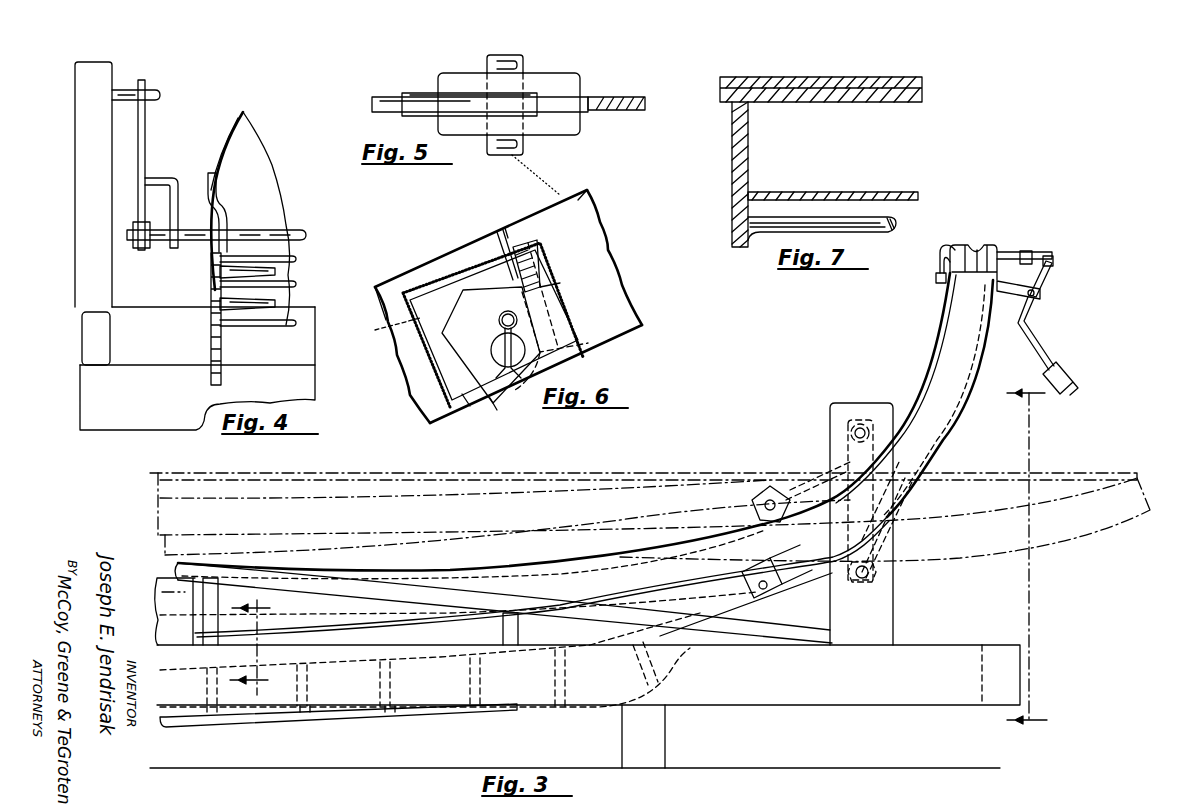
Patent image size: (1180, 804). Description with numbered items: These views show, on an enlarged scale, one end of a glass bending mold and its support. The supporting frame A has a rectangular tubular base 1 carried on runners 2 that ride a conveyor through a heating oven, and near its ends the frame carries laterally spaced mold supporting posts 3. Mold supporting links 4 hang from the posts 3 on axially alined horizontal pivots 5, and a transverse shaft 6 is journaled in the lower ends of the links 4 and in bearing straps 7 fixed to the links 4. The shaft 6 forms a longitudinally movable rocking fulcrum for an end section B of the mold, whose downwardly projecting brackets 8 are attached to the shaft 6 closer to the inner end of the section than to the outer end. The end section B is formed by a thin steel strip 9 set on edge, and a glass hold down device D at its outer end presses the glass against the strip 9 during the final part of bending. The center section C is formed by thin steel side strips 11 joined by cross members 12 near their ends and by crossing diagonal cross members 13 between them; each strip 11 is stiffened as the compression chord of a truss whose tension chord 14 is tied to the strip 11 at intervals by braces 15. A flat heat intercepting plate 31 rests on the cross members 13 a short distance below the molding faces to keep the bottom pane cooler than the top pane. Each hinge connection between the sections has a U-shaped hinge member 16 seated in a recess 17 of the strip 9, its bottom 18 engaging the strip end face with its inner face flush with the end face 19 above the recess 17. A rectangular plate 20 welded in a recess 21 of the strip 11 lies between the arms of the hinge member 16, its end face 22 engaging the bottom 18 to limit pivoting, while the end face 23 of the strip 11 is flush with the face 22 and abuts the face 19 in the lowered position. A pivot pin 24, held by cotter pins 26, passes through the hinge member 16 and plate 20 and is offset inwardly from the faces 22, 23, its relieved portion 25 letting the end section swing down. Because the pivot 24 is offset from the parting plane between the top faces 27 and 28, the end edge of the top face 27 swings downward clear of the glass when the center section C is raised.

In FIG. 4, the base 1 is at (78, 362).
In FIG. 3, the base 1 is at (778, 700).
In FIG. 3, the runners 2 is at (666, 742).
In FIG. 4, the mold supporting posts 3 is at (75, 150).
In FIG. 3, the mold supporting posts 3 is at (895, 632).
In FIG. 4, the mold supporting links 4 is at (146, 135).
In FIG. 3, the mold supporting links 4 is at (840, 440).
In FIG. 4, the horizontal pivots 5 is at (160, 92).
In FIG. 3, the horizontal pivots 5 is at (858, 426).
In FIG. 4, the shaft 6 is at (182, 244).
In FIG. 3, the shaft 6 is at (873, 585).
In FIG. 4, the bearing straps 7 is at (178, 195).
In FIG. 3, the bearing straps 7 is at (212, 642).
In FIG. 4, the brackets 8 is at (222, 205).
In FIG. 3, the brackets 8 is at (895, 533).
In FIG. 4, the steel strip 9 is at (243, 112).
In FIG. 5, the steel strip 9 is at (638, 97).
In FIG. 6, the steel strip 9 is at (612, 343).
In FIG. 3, the steel strip 9 is at (958, 368).
In FIG. 5, the side strips 11 is at (376, 97).
In FIG. 6, the side strips 11 is at (412, 372).
In FIG. 7, the side strips 11 is at (732, 156).
In FIG. 3, the side strips 11 is at (426, 648).
In FIG. 7, the cross members 12 is at (820, 192).
In FIG. 4, the diagonal cross members 13 is at (268, 295).
In FIG. 4, the tension chord 14 is at (211, 354).
In FIG. 3, the tension chord 14 is at (288, 720).
In FIG. 3, the braces 15 is at (378, 692).
In FIG. 5, the U-shaped hinge member 16 is at (560, 75).
In FIG. 6, the U-shaped hinge member 16 is at (494, 404).
In FIG. 3, the U-shaped hinge member 16 is at (524, 577).
In FIG. 6, the recess 17 is at (545, 286).
In FIG. 6, the bottom 18 is at (538, 246).
In FIG. 6, the end face 19 is at (498, 236).
In FIG. 5, the rectangular plate 20 is at (418, 93).
In FIG. 6, the rectangular plate 20 is at (466, 408).
In FIG. 6, the recess 21 is at (400, 336).
In FIG. 6, the end face 22 is at (512, 290).
In FIG. 6, the end face 23 is at (508, 232).
In FIG. 3, the end face 23 is at (768, 490).
In FIG. 5, the pivot pin 24 is at (487, 64).
In FIG. 6, the pivot pin 24 is at (495, 352).
In FIG. 3, the pivot pin 24 is at (766, 590).
In FIG. 6, the relieved portion 25 is at (572, 340).
In FIG. 5, the cotter pins 26 is at (525, 63).
In FIG. 6, the cotter pins 26 is at (499, 322).
In FIG. 6, the top face 27 is at (570, 200).
In FIG. 3, the top face 27 is at (832, 484).
In FIG. 6, the top face 28 is at (445, 262).
In FIG. 7, the top face 28 is at (724, 92).
In FIG. 3, the top face 28 is at (637, 592).
In FIG. 7, the intercepting plate 31 is at (900, 192).
In FIG. 4, the supporting frame A is at (72, 330).
In FIG. 3, the supporting frame A is at (1027, 655).
In FIG. 3, the end sections B is at (945, 440).
In FIG. 3, the center section C is at (660, 635).
In FIG. 3, the glass hold down device D is at (1030, 252).